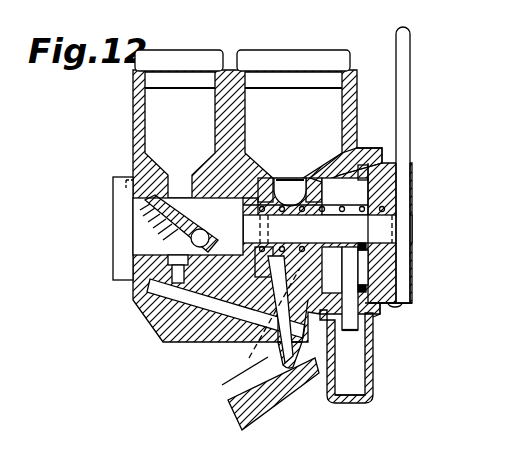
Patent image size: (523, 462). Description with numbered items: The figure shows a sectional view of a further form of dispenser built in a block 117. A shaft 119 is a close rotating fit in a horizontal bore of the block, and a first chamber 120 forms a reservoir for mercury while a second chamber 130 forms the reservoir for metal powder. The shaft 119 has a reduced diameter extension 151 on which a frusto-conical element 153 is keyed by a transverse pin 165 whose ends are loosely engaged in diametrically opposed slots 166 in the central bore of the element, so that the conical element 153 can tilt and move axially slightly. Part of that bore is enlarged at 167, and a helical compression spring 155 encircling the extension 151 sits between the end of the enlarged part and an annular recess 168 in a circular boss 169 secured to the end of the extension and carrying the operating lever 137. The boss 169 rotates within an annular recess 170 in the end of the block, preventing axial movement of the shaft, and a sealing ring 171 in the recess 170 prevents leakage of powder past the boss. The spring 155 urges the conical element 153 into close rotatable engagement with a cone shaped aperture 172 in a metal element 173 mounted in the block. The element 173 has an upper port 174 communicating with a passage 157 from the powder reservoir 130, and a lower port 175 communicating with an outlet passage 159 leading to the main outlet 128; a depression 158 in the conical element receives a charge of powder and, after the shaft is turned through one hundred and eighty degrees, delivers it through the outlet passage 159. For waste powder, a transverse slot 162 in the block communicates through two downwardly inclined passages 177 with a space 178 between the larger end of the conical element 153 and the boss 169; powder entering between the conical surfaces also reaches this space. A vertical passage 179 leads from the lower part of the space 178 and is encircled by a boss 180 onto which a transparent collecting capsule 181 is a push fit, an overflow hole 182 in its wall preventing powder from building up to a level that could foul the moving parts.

The block 117 is at (133, 306).
The shaft 119 is at (133, 199).
The first chamber 120 is at (182, 93).
The main outlet 128 is at (292, 357).
The second chamber 130 is at (290, 93).
The operating lever 137 is at (410, 78).
The extension 151 is at (412, 238).
The conical element 153 is at (336, 272).
The helical compression spring 155 is at (412, 225).
The passage 157 is at (342, 153).
The depression 158 is at (356, 183).
The outlet passage 159 is at (287, 368).
The transverse slot 162 is at (160, 312).
The transverse pin 165 is at (243, 222).
The slots 166 is at (258, 212).
The enlarged part of the bore 167 is at (345, 201).
The annular recess 168 is at (273, 263).
The circular boss 169 is at (395, 305).
The annular recess 170 is at (382, 164).
The sealing ring 171 is at (390, 170).
The cone shaped aperture 172 is at (290, 178).
The metal element 173 is at (273, 180).
The port 174 is at (288, 190).
The port 175 is at (256, 322).
The downwardly inclined passages 177 is at (232, 382).
The space 178 is at (364, 290).
The vertical passage 179 is at (378, 347).
The boss 180 is at (374, 332).
The transparent collecting capsule 181 is at (350, 402).
The overflow hole 182 is at (378, 323).